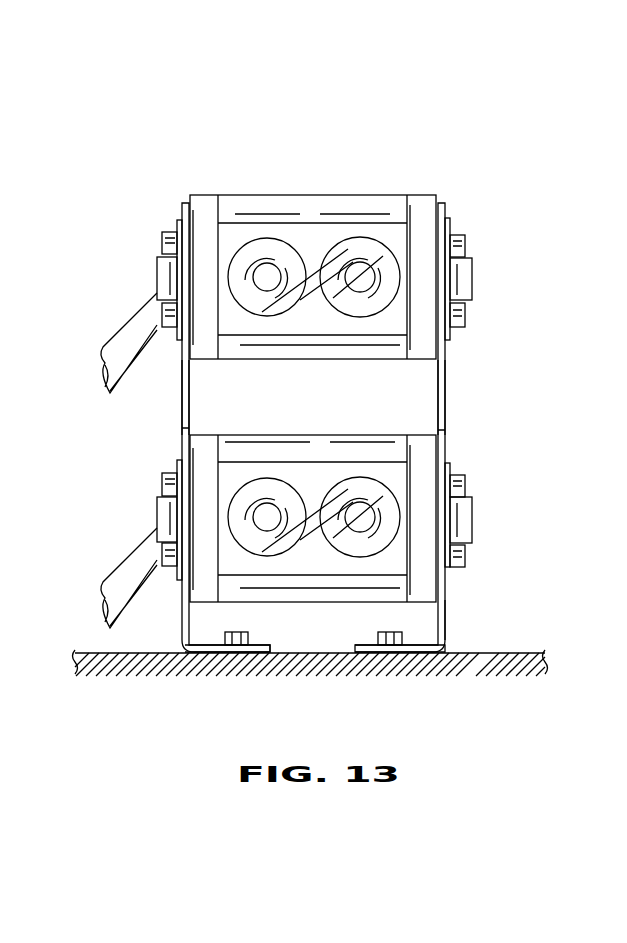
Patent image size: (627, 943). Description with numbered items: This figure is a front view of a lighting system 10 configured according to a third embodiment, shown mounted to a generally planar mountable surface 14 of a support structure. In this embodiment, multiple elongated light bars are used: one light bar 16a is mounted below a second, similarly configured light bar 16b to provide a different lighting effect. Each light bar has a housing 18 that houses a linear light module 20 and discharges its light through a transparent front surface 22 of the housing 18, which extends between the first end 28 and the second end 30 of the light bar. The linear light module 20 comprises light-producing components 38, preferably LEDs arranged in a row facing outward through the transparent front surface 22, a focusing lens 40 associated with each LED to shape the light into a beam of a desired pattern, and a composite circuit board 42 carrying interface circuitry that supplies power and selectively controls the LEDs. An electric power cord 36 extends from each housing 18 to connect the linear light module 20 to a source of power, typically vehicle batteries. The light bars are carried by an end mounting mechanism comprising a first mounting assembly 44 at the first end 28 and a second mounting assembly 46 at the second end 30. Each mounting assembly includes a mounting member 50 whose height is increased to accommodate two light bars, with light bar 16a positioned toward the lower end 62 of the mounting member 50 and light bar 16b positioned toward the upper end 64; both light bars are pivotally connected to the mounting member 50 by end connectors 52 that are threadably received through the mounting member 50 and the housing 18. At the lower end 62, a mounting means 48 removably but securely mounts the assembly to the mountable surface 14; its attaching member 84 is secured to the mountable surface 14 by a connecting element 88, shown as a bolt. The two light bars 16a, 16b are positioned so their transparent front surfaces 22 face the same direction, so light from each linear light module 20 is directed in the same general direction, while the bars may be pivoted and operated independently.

The lighting system 10 is at (545, 140).
The mountable surface 14 is at (532, 650).
The light bar 16a is at (325, 433).
The light bar 16b is at (350, 190).
The housing 18 is at (305, 352).
The linear light module 20 is at (385, 318).
The transparent front surface 22 is at (311, 262).
The first end 28 is at (190, 190).
The second end 30 is at (440, 190).
The electric power cord 36 is at (138, 340).
The light-producing components 38 is at (266, 268).
The focusing lens 40 is at (253, 547).
The composite circuit board 42 is at (232, 478).
The first mounting assembly 44 is at (158, 238).
The second mounting assembly 46 is at (480, 228).
The mounting means 48 is at (412, 657).
The mounting member 50 is at (186, 402).
The end connector 52 is at (165, 283).
The lower end 62 is at (455, 645).
The upper end 64 is at (176, 212).
The attaching member 84 is at (210, 652).
The connecting element 88 is at (238, 640).